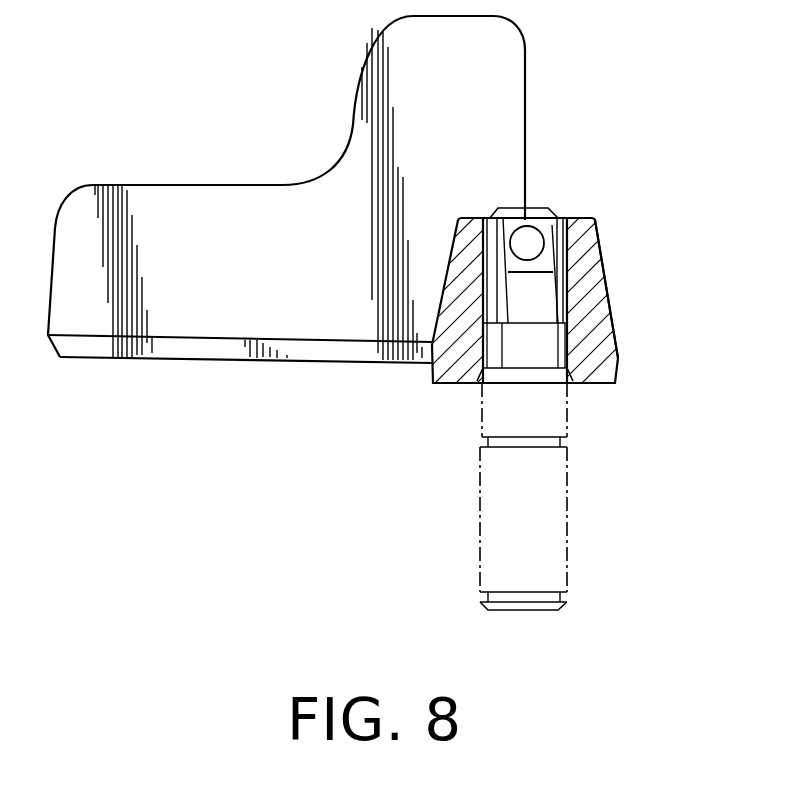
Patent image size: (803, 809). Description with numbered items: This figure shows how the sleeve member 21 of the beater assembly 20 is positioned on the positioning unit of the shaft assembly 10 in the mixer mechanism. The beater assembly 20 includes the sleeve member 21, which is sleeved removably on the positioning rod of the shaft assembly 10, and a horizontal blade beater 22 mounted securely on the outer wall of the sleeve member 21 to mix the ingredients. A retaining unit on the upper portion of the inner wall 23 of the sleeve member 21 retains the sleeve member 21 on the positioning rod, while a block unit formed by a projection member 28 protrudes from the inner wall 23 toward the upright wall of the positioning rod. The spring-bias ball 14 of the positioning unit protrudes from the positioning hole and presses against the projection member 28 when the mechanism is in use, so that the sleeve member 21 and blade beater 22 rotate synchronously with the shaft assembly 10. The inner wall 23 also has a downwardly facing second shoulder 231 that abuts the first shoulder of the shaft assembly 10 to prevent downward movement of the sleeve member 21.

The shaft assembly 10 is at (568, 425).
The spring-bias ball 14 is at (527, 222).
The beater assembly 20 is at (620, 363).
The sleeve member 21 is at (600, 233).
The blade beater 22 is at (353, 157).
The inner wall of the sleeve member 23 is at (567, 282).
The second shoulder 231 is at (570, 318).
The projection member 28 is at (560, 220).